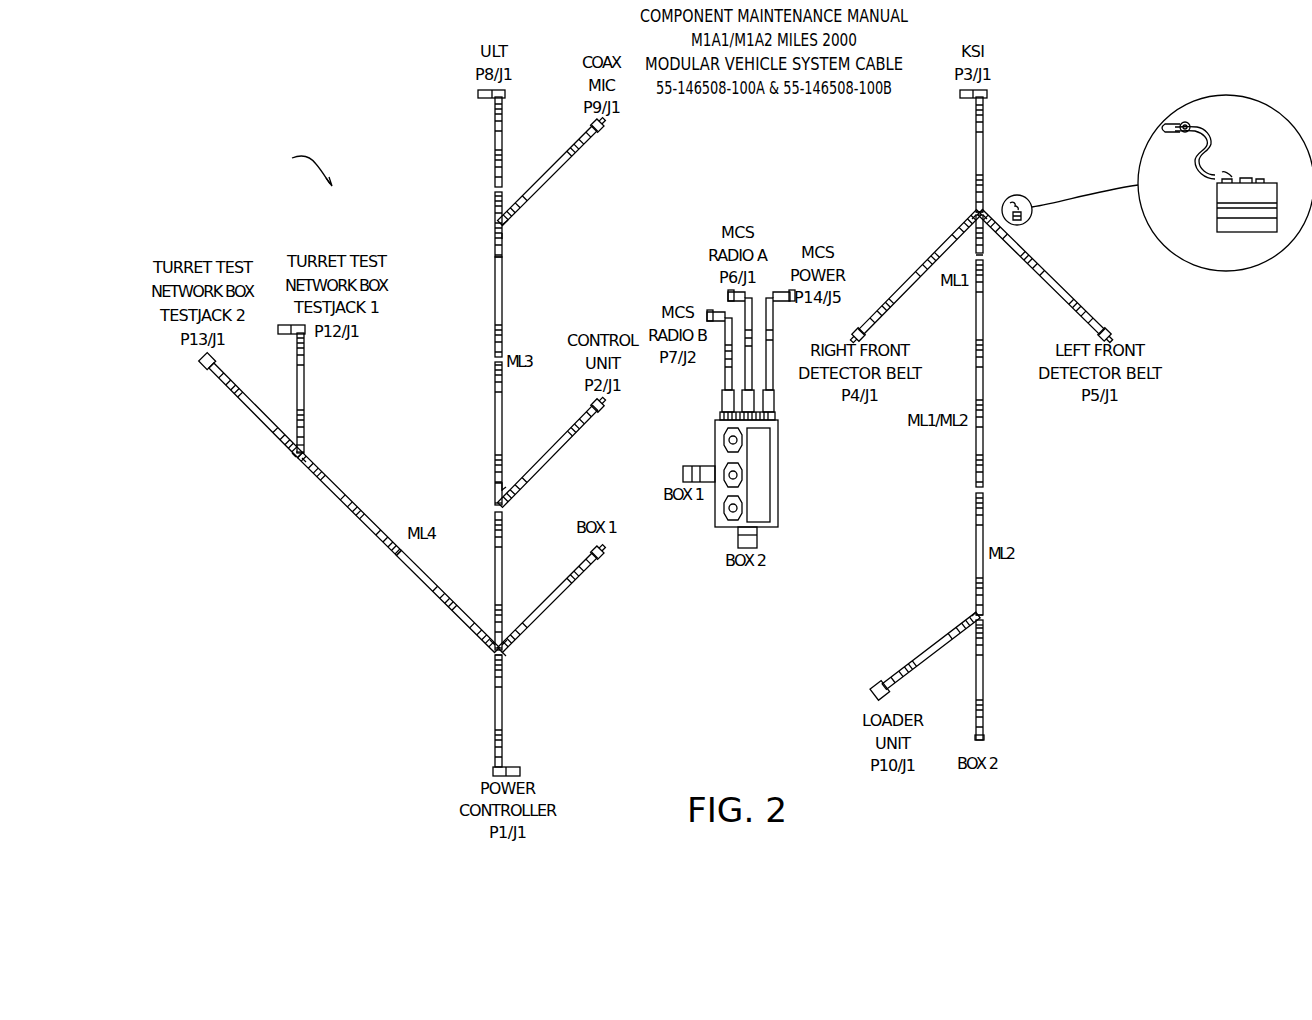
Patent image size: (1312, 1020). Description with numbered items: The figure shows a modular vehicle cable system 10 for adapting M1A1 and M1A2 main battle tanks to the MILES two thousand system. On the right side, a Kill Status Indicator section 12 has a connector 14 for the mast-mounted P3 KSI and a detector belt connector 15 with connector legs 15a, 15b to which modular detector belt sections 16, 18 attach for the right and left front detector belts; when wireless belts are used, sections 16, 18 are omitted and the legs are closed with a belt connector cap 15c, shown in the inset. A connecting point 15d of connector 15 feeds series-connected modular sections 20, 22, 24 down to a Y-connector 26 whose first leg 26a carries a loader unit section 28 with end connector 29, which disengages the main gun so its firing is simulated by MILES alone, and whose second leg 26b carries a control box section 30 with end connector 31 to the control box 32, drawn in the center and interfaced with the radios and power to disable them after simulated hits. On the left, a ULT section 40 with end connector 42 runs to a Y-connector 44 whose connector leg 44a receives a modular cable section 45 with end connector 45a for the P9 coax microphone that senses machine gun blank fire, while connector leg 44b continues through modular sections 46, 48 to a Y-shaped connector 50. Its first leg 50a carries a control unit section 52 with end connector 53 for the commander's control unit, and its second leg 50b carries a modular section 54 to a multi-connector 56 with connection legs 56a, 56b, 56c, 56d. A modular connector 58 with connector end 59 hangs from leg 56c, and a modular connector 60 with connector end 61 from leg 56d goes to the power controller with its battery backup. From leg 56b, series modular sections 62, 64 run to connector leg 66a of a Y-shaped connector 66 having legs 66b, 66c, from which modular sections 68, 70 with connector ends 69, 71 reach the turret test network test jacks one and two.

The modular vehicle cable system 10 is at (300, 166).
The Kill Status Indicator (KSI) section 12 is at (983, 140).
The connector 14 is at (960, 92).
The detector belt connector 15 is at (975, 209).
The detector belt connector leg 15a is at (973, 216).
The detector belt connector leg 15b is at (1008, 221).
The belt connector cap 15c is at (1242, 232).
The connecting point 15d is at (982, 237).
The modular detector belt section 16 is at (914, 274).
The modular detector belt section 18 is at (1048, 271).
The modular section 20 is at (983, 298).
The modular section 22 is at (983, 419).
The modular section 24 is at (976, 552).
The Y-connector 26 is at (983, 621).
The first leg 26a is at (976, 613).
The second leg 26b is at (983, 623).
The loader unit section 28 is at (937, 655).
The end connector 29 is at (876, 684).
The control box section 30 is at (983, 698).
The end connector 31 is at (984, 738).
The control box 32 is at (780, 521).
The ULT section 40 is at (495, 147).
The end connector 42 is at (479, 93).
The Y-connector 44 is at (495, 214).
The connector leg 44a is at (504, 223).
The connector leg 44b is at (504, 236).
The modular cable section 45 is at (557, 175).
The end connector 45a is at (600, 133).
The modular section 46 is at (505, 294).
The modular section 48 is at (495, 417).
The Y-shaped connector 50 is at (504, 482).
The first leg 50a is at (494, 490).
The second leg 50b is at (495, 507).
The control unit section 52 is at (553, 458).
The end connector 53 is at (600, 407).
The modular section 54 is at (495, 571).
The multi-connector 56 is at (503, 658).
The connection leg 56a is at (503, 643).
The connection leg 56b is at (493, 647).
The connection leg 56c is at (505, 652).
The connection leg 56d is at (493, 658).
The modular connector 58 is at (555, 605).
The connector end 59 is at (605, 553).
The modular connector 60 is at (502, 718).
The connector end 61 is at (520, 770).
The modular section 62 is at (453, 614).
The modular section 64 is at (345, 509).
The Y-shaped connector 66 is at (305, 441).
The connector leg 66a is at (303, 464).
The connection leg 66b is at (290, 444).
The connection leg 66c is at (305, 427).
The modular section 68 is at (304, 376).
The connector end 69 is at (278, 329).
The modular section 70 is at (255, 422).
The connector end 71 is at (200, 375).